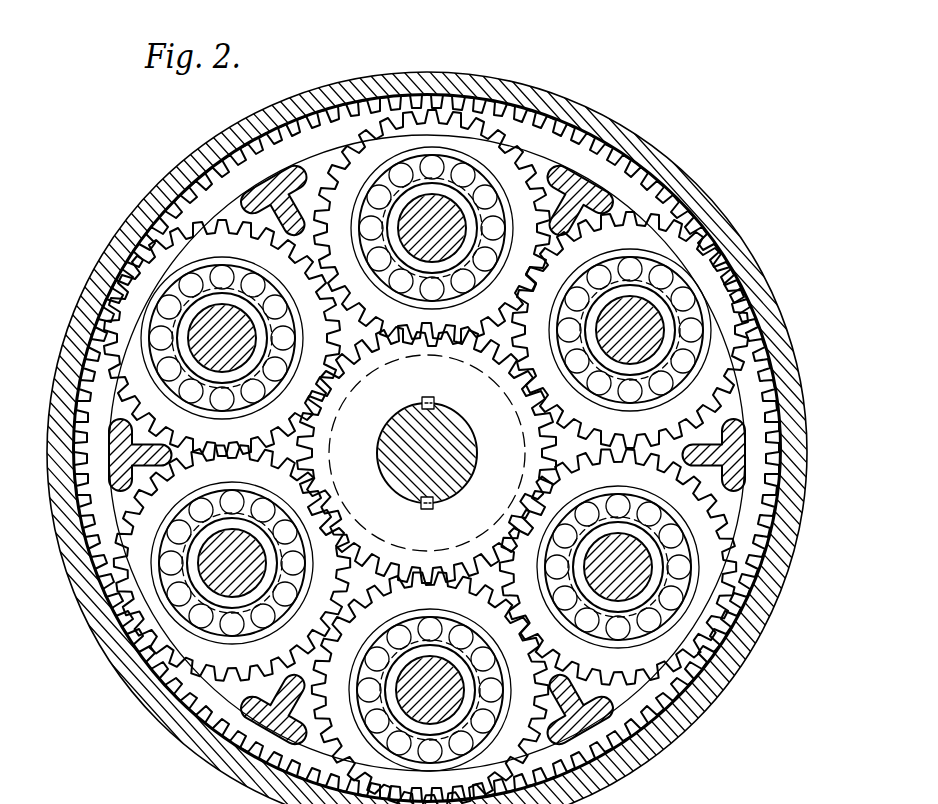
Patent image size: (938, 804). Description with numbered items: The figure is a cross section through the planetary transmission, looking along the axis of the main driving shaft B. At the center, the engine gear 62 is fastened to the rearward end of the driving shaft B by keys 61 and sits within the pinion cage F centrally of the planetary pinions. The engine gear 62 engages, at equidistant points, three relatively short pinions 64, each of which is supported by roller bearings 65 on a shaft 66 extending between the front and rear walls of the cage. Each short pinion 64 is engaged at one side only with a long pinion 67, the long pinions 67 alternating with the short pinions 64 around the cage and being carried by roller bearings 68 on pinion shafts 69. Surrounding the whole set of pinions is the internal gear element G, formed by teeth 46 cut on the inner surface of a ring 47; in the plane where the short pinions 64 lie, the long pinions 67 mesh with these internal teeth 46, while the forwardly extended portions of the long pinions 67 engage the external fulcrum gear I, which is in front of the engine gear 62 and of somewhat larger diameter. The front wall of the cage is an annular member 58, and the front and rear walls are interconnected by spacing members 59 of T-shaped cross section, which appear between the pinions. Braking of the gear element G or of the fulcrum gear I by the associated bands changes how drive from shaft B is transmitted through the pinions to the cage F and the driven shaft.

The teeth 46 is at (297, 126).
The ring 47 is at (350, 88).
The internal gear element G is at (413, 71).
The pinion cage F is at (570, 158).
The annular member 58 is at (612, 205).
The spacing members 59 is at (596, 181).
The keys 61 is at (434, 398).
The engine gear 62 is at (413, 393).
The main driving shaft B is at (401, 432).
The external gear element I is at (371, 545).
The short pinions 64 is at (432, 228).
The roller bearings 65 is at (483, 197).
The shafts 66 is at (447, 217).
The long pinions 67 is at (630, 330).
The roller bearings 68 is at (658, 282).
The pinion shafts 69 is at (650, 320).